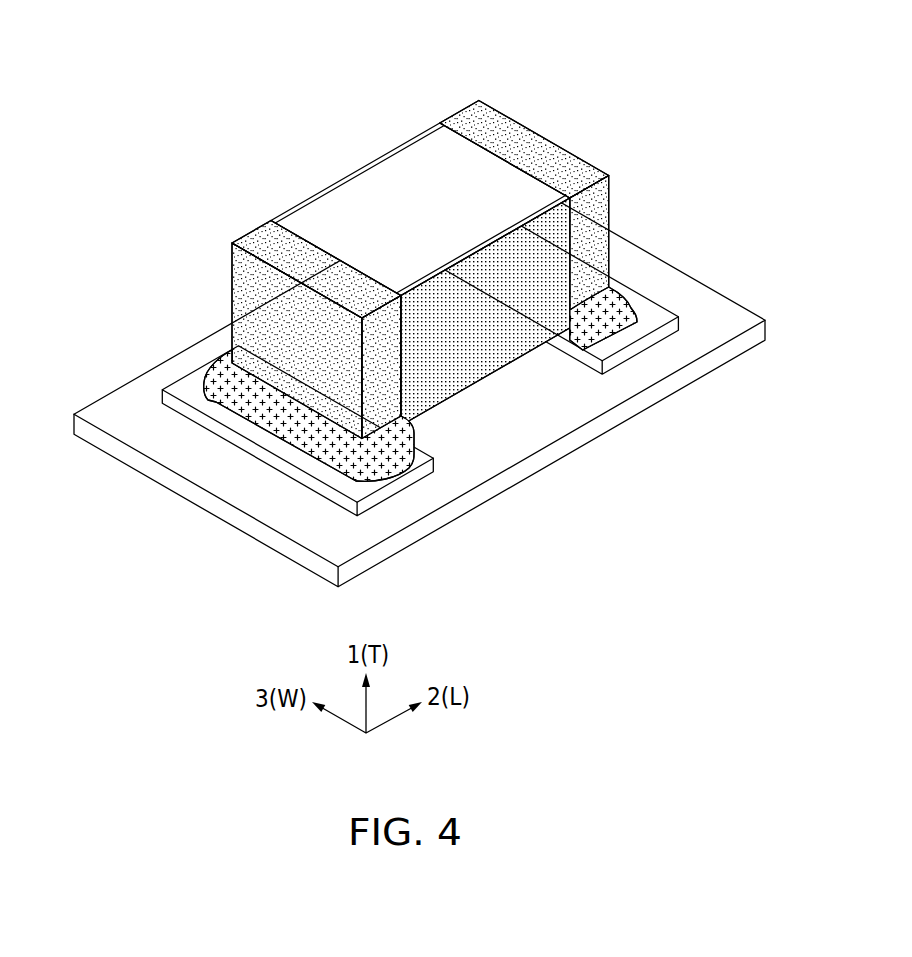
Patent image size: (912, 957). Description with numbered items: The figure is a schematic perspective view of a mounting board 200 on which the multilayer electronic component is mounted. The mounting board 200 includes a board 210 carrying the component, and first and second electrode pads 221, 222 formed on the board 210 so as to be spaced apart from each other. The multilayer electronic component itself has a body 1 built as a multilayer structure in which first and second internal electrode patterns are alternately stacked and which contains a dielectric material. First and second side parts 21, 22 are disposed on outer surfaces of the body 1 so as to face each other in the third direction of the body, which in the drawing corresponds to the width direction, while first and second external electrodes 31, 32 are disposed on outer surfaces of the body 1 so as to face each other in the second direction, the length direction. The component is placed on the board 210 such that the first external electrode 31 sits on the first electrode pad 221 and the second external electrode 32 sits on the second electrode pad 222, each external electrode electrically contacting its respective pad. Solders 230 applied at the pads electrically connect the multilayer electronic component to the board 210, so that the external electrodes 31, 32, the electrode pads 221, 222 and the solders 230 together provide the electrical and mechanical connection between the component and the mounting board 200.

The mounting board 200 is at (271, 43).
The body 1 is at (381, 306).
The first side part 21 is at (487, 360).
The second side part 22 is at (320, 202).
The first external electrode 31 is at (250, 293).
The second external electrode 32 is at (553, 151).
The board 210 is at (588, 402).
The first electrode pad 221 is at (323, 468).
The second electrode pad 222 is at (653, 318).
The solder 230 is at (247, 402).